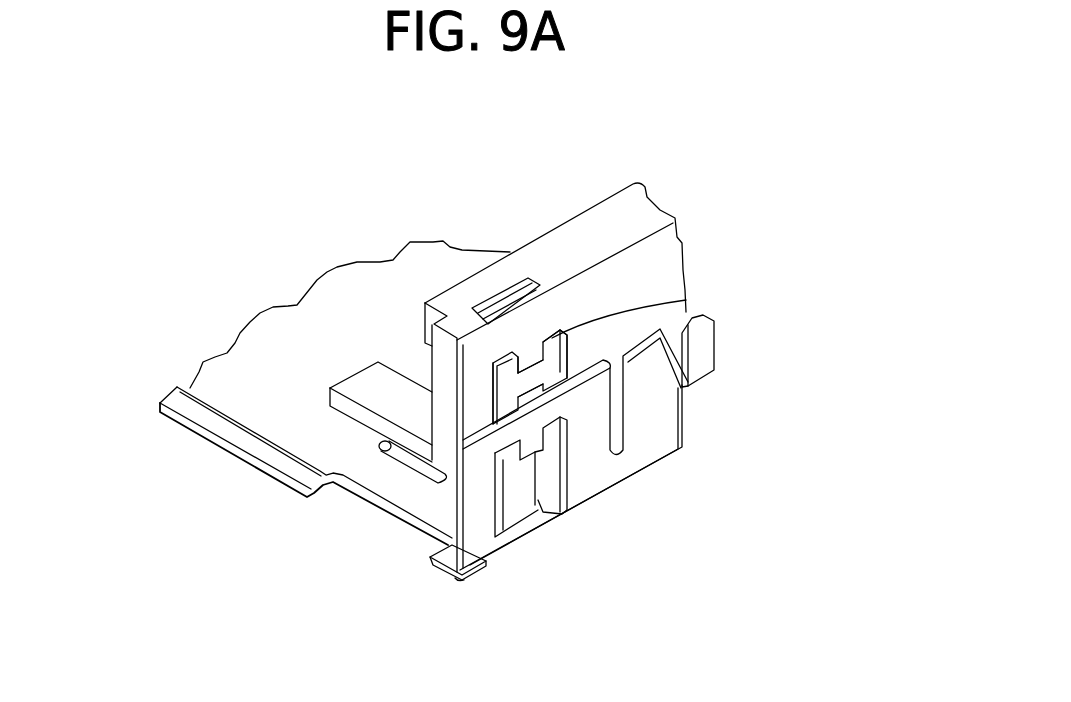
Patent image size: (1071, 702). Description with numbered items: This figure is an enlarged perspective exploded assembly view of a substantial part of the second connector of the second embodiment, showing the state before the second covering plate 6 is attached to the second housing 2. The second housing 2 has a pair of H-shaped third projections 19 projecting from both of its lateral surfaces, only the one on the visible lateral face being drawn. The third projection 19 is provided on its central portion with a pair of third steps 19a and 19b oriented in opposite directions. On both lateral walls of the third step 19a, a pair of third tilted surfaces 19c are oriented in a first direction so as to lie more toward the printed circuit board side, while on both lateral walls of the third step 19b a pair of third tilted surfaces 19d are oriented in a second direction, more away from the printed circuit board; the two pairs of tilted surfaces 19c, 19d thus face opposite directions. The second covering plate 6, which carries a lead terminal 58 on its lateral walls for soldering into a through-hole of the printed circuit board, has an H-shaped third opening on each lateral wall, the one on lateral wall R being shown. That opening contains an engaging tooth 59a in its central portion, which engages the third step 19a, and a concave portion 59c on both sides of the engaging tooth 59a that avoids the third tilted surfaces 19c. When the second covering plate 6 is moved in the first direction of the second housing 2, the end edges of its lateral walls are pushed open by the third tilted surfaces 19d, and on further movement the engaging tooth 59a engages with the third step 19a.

The second housing 2 is at (646, 184).
The second covering plate 6 is at (210, 450).
The third projection 19 is at (478, 413).
The third step 19a is at (528, 352).
The third step 19b is at (535, 400).
The third tilted surface 19c is at (498, 364).
The third tilted surface 19d is at (484, 446).
The lead terminal 58 is at (707, 350).
The engaging tooth 59a is at (538, 460).
The concave portion 59c is at (500, 470).
The lateral wall R is at (462, 580).